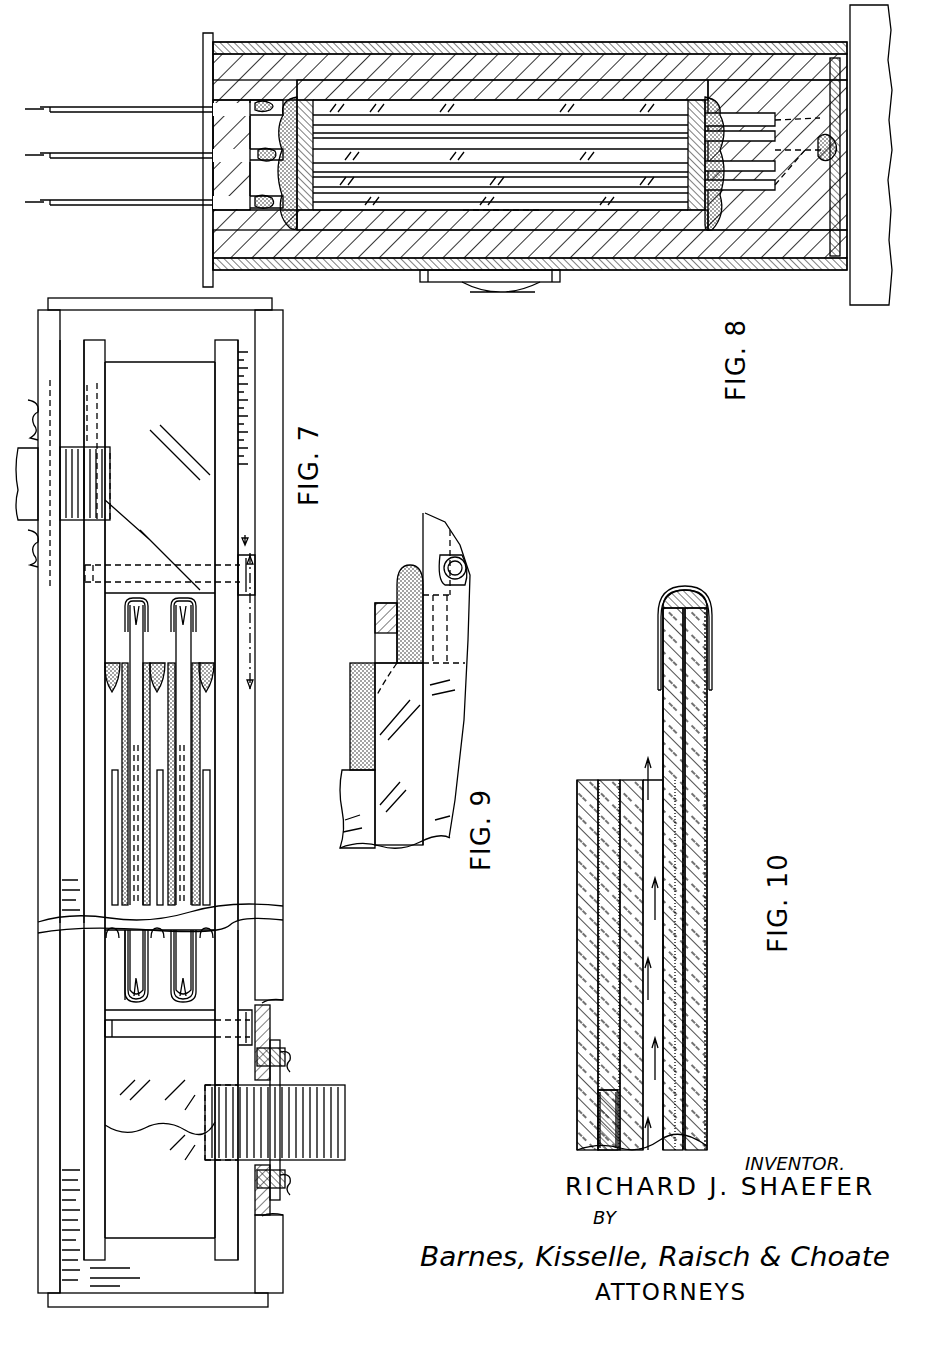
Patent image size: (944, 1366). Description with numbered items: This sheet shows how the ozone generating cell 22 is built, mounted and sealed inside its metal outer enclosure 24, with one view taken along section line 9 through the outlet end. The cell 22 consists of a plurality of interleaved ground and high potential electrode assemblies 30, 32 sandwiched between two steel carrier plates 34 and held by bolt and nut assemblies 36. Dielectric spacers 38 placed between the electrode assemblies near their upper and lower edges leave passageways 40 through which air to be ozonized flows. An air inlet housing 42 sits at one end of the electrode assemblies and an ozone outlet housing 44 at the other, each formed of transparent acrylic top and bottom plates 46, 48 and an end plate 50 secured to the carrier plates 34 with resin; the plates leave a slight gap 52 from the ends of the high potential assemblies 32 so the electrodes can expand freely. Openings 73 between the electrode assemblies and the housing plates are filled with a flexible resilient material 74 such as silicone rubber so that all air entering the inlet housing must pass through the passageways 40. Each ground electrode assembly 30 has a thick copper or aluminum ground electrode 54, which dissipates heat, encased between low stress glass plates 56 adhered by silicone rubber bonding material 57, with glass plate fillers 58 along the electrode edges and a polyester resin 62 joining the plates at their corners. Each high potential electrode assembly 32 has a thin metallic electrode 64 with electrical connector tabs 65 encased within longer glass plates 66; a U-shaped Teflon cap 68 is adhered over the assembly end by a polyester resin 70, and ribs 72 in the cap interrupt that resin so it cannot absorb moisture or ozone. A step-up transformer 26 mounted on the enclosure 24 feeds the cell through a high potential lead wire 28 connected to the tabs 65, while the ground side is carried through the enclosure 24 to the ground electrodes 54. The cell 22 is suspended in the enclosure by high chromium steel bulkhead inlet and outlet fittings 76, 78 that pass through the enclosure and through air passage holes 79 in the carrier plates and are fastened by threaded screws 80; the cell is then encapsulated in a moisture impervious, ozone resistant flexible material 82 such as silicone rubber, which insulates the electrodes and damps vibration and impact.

In FIG. 7, the section line 9— 9 is at (261, 615).
In FIG. 7, the ozone generating cell 22 is at (81, 1048).
In FIG. 8, the outer enclosure 24 is at (649, 264).
In FIG. 7, the outer enclosure 24 is at (283, 935).
In FIG. 8, the step-up transformer 26 is at (866, 296).
In FIG. 8, the high potential lead wire 28 is at (820, 152).
In FIG. 7, the ground electrode assembly 30 is at (210, 732).
In FIG. 9, the ground electrode assembly 30 is at (382, 863).
In FIG. 10, the ground electrode assembly 30 is at (553, 992).
In FIG. 7, the high potential electrode assembly 32 is at (135, 644).
In FIG. 9, the high potential electrode assembly 32 is at (381, 582).
In FIG. 10, the high potential electrode assembly 32 is at (718, 1044).
In FIG. 8, the steel carrier plates 34 is at (604, 236).
In FIG. 7, the steel carrier plates 34 is at (95, 826).
In FIG. 7, the bolt and nut assemblies 36 is at (250, 1020).
In FIG. 9, the bolt and nut assemblies 36 is at (453, 552).
In FIG. 8, the spacers 38 is at (190, 112).
In FIG. 7, the spacers 38 is at (123, 725).
In FIG. 9, the spacers 38 is at (357, 698).
In FIG. 10, the spacers 38 is at (665, 1150).
In FIG. 8, the passageways 40 is at (468, 142).
In FIG. 10, the passageways 40 is at (659, 768).
In FIG. 7, the air inlet housing 42 is at (210, 1218).
In FIG. 7, the ozone outlet housing 44 is at (240, 395).
In FIG. 7, the top housing plate 46 is at (169, 1178).
In FIG. 7, the bottom housing plate 48 is at (188, 482).
In FIG. 9, the bottom housing plate 48 is at (423, 540).
In FIG. 7, the end plate 50 is at (148, 354).
In FIG. 7, the gap 52 is at (192, 605).
In FIG. 9, the gap 52 is at (466, 578).
In FIG. 8, the ground electrode 54 is at (45, 153).
In FIG. 7, the ground electrode 54 is at (208, 820).
In FIG. 9, the ground electrode 54 is at (368, 785).
In FIG. 10, the ground electrode 54 is at (600, 1105).
In FIG. 9, the glass plates 56 is at (411, 770).
In FIG. 10, the glass plates 56 is at (634, 782).
In FIG. 10, the silicone rubber bonding material 57 is at (680, 947).
In FIG. 10, the glass plate fillers 58 is at (610, 782).
In FIG. 7, the polyester resin 62 is at (212, 662).
In FIG. 7, the high potential electrode 64 is at (183, 758).
In FIG. 10, the high potential electrode 64 is at (688, 1112).
In FIG. 8, the electrical connector tabs 65 is at (800, 158).
In FIG. 10, the glass plates 66 is at (668, 702).
In FIG. 7, the U-shaped cap 68 is at (150, 612).
In FIG. 9, the U-shaped cap 68 is at (375, 605).
In FIG. 10, the U-shaped cap 68 is at (662, 625).
In FIG. 10, the polyester resin 70 is at (692, 588).
In FIG. 10, the ribs 72 is at (712, 655).
In FIG. 7, the openings 73 is at (115, 620).
In FIG. 8, the flexible resilient material 74 is at (290, 95).
In FIG. 9, the flexible resilient material 74 is at (410, 567).
In FIG. 8, the bulkhead inlet fitting 76 is at (465, 290).
In FIG. 7, the bulkhead inlet fitting 76 is at (345, 1092).
In FIG. 7, the bulkhead outlet fitting 78 is at (36, 402).
In FIG. 7, the air passage holes 79 is at (135, 505).
In FIG. 7, the threaded screws 80 is at (286, 1070).
In FIG. 8, the flexible encapsulating material 82 is at (344, 260).